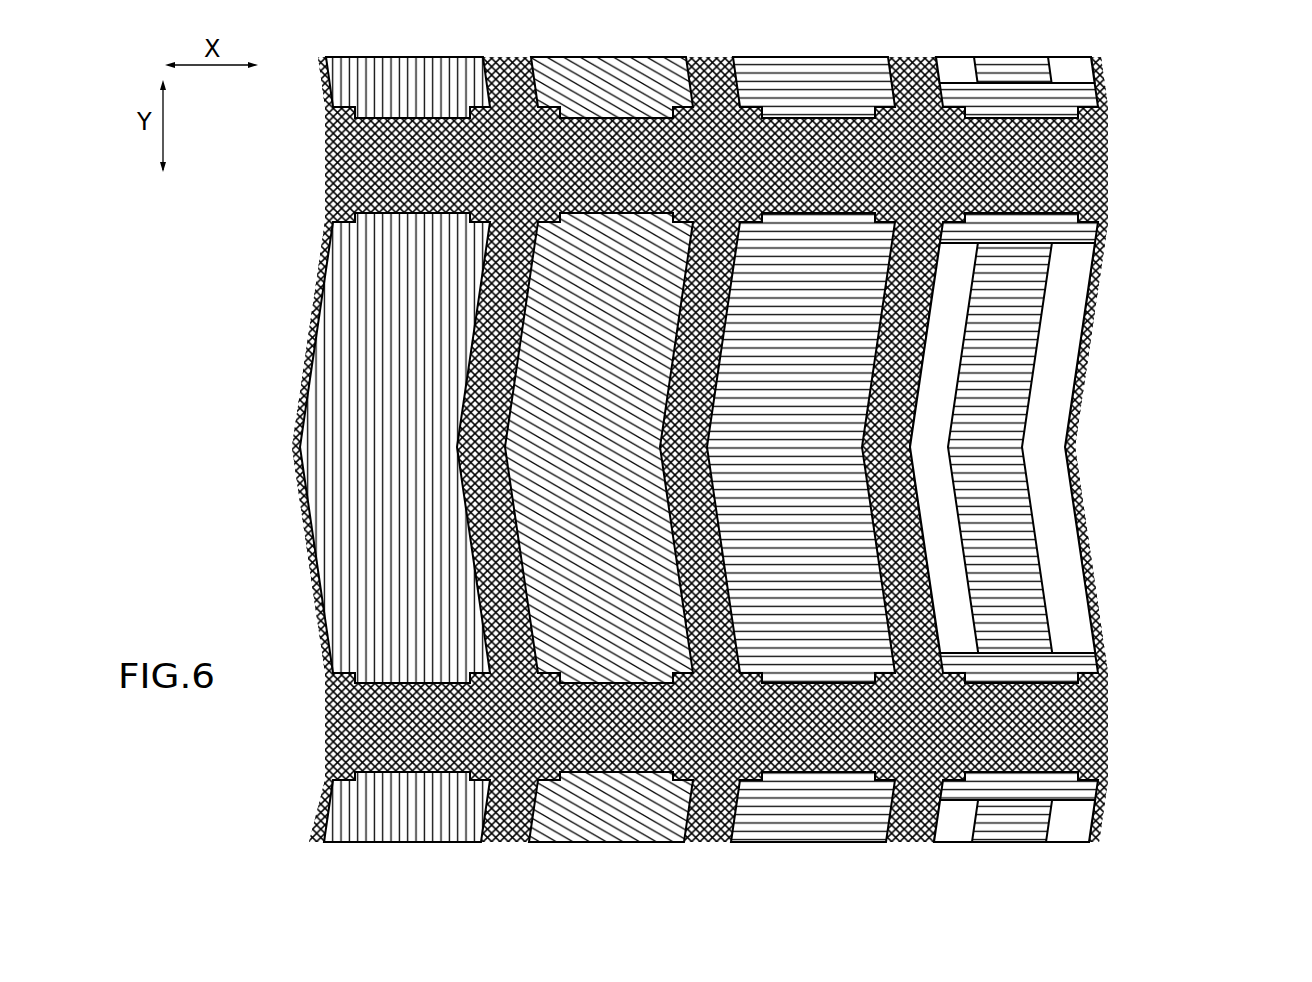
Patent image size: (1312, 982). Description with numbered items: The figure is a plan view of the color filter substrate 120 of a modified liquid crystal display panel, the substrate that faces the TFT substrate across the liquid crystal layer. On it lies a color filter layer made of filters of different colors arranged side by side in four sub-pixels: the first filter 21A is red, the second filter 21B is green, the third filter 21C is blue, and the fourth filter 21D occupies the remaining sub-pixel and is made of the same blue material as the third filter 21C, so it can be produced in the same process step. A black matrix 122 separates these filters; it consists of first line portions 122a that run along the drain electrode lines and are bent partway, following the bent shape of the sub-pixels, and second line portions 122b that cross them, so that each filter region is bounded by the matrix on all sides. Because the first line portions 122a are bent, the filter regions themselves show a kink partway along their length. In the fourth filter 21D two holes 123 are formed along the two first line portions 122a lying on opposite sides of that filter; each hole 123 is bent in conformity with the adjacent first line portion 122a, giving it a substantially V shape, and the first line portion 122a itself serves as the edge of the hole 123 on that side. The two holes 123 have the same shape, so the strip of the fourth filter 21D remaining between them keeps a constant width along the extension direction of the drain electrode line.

The color filter substrate 120 is at (1180, 100).
The black matrix 122 is at (1236, 542).
The first line portion 122a is at (1092, 332).
The second line portion 122b is at (1080, 182).
The hole 123 is at (953, 287).
The first filter 21A is at (410, 640).
The second filter 21B is at (620, 640).
The third filter 21C is at (812, 640).
The fourth filter 21D is at (993, 383).